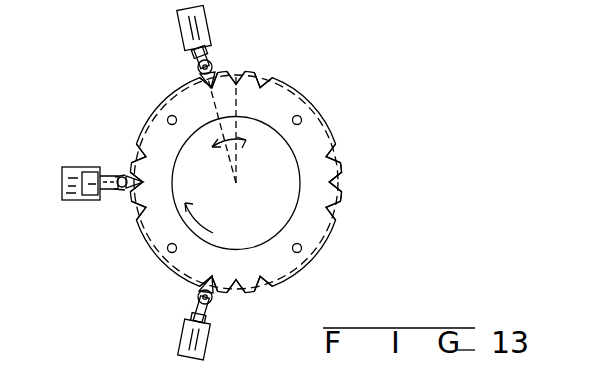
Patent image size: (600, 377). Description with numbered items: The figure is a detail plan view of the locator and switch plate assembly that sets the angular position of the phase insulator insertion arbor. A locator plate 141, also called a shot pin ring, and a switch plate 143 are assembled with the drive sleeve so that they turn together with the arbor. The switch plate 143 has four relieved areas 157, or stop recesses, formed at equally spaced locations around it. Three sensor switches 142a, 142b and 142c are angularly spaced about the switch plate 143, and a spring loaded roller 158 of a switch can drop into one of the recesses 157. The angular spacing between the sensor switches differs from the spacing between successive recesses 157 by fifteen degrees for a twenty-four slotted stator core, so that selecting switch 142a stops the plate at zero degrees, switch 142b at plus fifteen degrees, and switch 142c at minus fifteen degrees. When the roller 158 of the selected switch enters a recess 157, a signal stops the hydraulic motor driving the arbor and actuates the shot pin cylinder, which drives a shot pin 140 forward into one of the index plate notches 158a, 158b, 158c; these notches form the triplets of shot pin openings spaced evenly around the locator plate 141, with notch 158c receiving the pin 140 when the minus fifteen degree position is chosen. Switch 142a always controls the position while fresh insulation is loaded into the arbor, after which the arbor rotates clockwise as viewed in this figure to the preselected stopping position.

The shot pin 140 is at (110, 175).
The locator plate 141 is at (320, 263).
The sensor switch 142a is at (85, 201).
The sensor switch 142b is at (185, 332).
The sensor switch 142c is at (208, 26).
The switch plate 143 is at (338, 214).
The relieved areas 157 is at (237, 72).
The spring loaded roller 158 is at (198, 68).
The ratchet tooth 158a is at (333, 208).
The ratchet tooth 158b is at (330, 184).
The index plate notch 158c is at (333, 157).